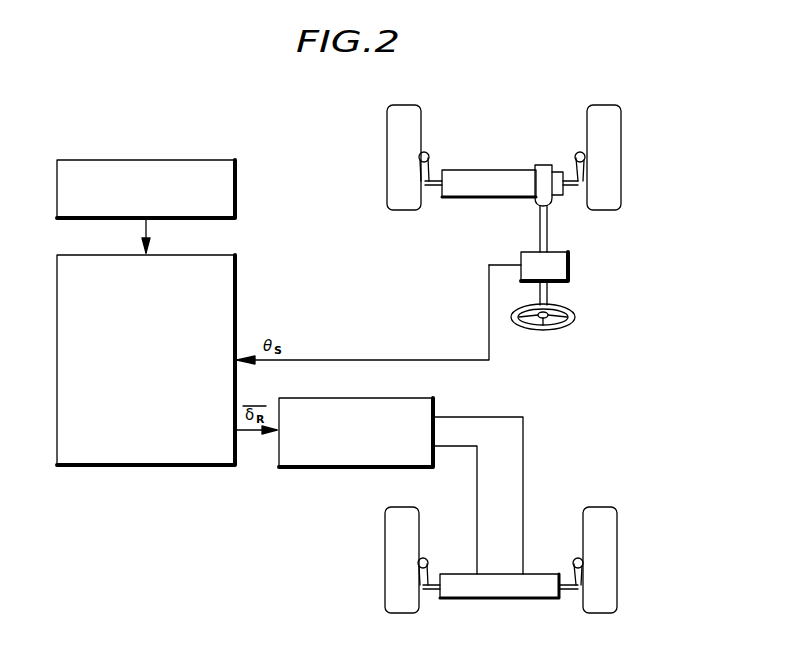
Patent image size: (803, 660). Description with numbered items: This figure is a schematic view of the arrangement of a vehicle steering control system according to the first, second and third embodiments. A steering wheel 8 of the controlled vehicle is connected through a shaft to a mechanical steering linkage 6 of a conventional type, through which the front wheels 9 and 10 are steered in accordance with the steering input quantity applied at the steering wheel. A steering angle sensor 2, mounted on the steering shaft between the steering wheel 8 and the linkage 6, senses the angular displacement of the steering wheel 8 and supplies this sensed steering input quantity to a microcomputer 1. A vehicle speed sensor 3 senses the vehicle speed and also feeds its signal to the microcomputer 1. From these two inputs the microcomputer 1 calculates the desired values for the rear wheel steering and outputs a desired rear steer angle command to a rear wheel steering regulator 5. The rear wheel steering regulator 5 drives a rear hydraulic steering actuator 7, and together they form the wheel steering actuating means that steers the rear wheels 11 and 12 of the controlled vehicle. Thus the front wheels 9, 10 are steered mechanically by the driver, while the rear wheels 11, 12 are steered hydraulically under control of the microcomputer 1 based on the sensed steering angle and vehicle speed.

The microcomputer 1 is at (206, 468).
The steering angle sensor 2 is at (568, 268).
The vehicle speed sensor 3 is at (205, 160).
The rear wheel steering regulator 5 is at (294, 470).
The mechanical steering linkage 6 is at (523, 170).
The rear hydraulic steering actuator 7 is at (527, 600).
The steering wheel 8 is at (573, 323).
The front wheel 9 is at (621, 122).
The front wheel 10 is at (387, 114).
The rear wheel 11 is at (617, 524).
The rear wheel 12 is at (385, 517).